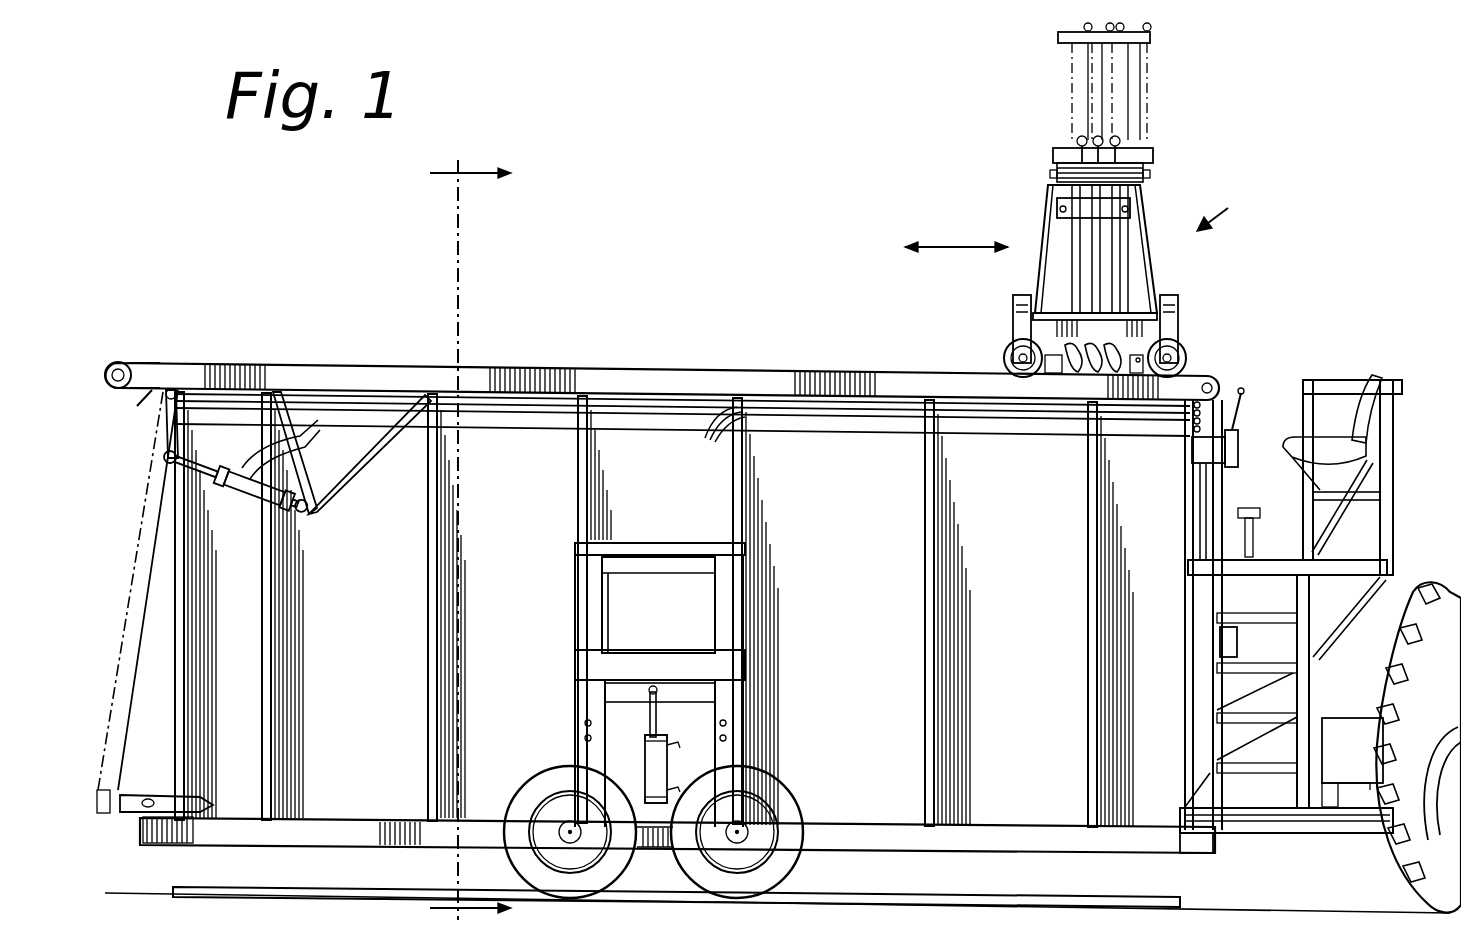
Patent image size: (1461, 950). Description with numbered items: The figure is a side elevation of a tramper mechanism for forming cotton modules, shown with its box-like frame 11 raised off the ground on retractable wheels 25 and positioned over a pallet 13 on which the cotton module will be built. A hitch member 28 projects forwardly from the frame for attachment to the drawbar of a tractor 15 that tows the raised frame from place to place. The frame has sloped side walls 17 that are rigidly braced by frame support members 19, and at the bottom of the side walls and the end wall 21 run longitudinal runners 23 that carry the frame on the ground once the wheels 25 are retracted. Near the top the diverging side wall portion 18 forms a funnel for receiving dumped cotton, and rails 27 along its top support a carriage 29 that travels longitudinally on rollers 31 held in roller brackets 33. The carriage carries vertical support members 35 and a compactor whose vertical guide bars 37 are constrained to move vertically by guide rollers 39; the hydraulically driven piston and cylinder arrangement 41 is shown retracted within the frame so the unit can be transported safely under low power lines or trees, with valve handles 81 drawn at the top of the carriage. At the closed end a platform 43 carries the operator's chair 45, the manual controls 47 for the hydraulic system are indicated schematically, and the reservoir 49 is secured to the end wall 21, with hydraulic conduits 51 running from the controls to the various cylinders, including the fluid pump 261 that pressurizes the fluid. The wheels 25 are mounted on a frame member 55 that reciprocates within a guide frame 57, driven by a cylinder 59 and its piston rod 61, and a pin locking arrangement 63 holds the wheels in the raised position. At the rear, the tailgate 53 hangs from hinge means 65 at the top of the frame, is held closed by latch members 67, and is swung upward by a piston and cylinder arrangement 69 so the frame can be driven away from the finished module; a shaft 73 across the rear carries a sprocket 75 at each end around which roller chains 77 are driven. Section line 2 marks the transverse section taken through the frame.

The section line 2- 2 is at (470, 540).
The frame 11 is at (692, 366).
The pallet 13 is at (1057, 897).
The tractor 15 is at (1407, 673).
The side walls 17 is at (852, 548).
The diverging side wall portion 18 is at (628, 415).
The frame support members 19 is at (428, 622).
The end wall 21 is at (1183, 518).
The longitudinal runners 23 is at (1037, 827).
The wheels 25 is at (530, 772).
The rails 27 is at (920, 373).
The hitch member 28 is at (1277, 835).
The carriage 29 is at (1081, 198).
The rollers 31 is at (1010, 342).
The roller brackets 33 is at (1013, 298).
The vertical support members 35 is at (1047, 242).
The vertical guide bars 37 is at (1078, 230).
The guide rollers 39 is at (1153, 155).
The piston and cylinder arrangement 41 is at (1097, 243).
The platform 43 is at (1365, 560).
The chair 45 is at (1373, 425).
The manual controls 47 is at (1234, 402).
The reservoir 49 is at (1217, 690).
The hydraulic conduits 51 is at (993, 417).
The tailgate 53 is at (165, 555).
The frame member 55 is at (700, 693).
The guide frame 57 is at (575, 712).
The cylinder 59 is at (668, 757).
The piston rod 61 is at (661, 718).
The pin locking arrangement 63 is at (728, 730).
The hinge means 65 is at (172, 388).
The latch members 67 is at (122, 835).
The piston and cylinder arrangement 69 is at (258, 497).
The shaft 73 is at (132, 372).
The sprocket 75 is at (118, 362).
The roller chains 77 is at (146, 397).
The valve handles 81 is at (1127, 152).
The fluid pump 261 is at (1237, 650).